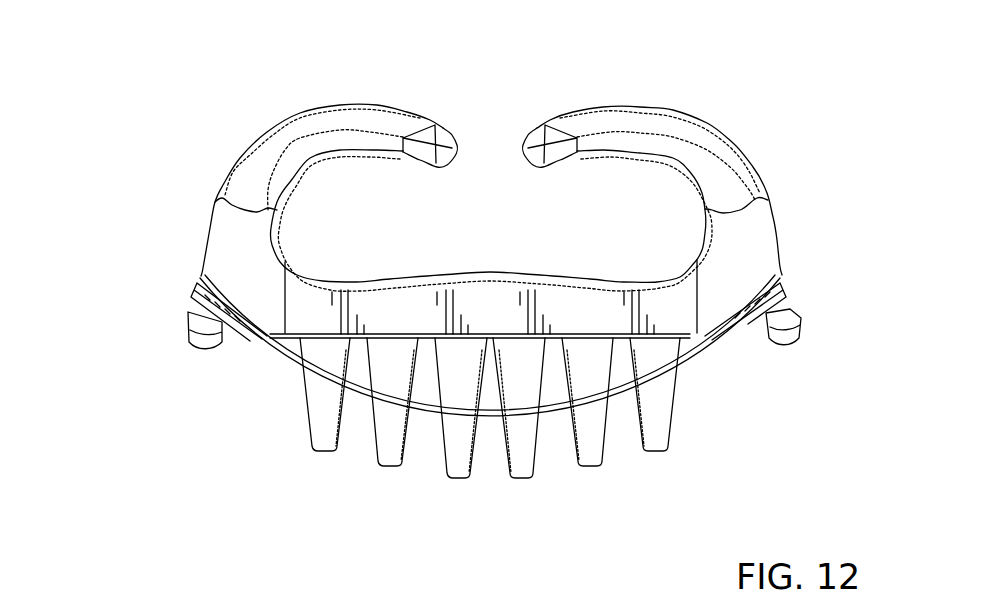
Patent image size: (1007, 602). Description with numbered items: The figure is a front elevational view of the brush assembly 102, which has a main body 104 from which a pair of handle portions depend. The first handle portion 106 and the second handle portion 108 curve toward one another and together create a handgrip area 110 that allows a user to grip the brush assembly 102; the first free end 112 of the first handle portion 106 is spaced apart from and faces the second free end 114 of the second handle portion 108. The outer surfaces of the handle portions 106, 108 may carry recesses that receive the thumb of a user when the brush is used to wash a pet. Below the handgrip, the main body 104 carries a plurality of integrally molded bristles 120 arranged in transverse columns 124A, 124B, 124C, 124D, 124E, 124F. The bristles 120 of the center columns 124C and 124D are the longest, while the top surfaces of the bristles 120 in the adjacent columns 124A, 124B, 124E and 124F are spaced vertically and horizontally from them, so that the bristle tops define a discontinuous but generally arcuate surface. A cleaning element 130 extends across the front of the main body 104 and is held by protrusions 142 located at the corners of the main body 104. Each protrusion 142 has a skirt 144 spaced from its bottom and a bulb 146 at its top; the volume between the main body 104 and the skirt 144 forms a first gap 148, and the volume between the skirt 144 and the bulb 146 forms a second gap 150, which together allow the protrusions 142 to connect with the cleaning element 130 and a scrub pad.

The brush assembly 102 is at (113, 46).
The main body 104 is at (750, 237).
The first handle portion 106 is at (277, 137).
The second handle portion 108 is at (700, 131).
The handgrip area 110 is at (499, 176).
The first free end 112 is at (433, 125).
The second free end 114 is at (550, 122).
The bristles 120 is at (453, 463).
The bristle column 124A is at (323, 478).
The bristle column 124B is at (396, 492).
The center bristle column 124C is at (464, 500).
The center bristle column 124D is at (535, 503).
The bristle column 124E is at (599, 500).
The bristle column 124F is at (670, 478).
The cleaning element 130 is at (690, 360).
The protrusion 142 is at (826, 345).
The skirt 144 is at (786, 291).
The bulb 146 is at (801, 330).
The first gap 148 is at (196, 260).
The second gap 150 is at (229, 346).